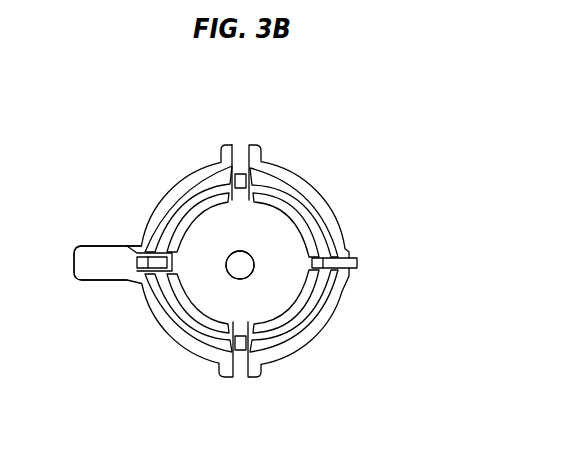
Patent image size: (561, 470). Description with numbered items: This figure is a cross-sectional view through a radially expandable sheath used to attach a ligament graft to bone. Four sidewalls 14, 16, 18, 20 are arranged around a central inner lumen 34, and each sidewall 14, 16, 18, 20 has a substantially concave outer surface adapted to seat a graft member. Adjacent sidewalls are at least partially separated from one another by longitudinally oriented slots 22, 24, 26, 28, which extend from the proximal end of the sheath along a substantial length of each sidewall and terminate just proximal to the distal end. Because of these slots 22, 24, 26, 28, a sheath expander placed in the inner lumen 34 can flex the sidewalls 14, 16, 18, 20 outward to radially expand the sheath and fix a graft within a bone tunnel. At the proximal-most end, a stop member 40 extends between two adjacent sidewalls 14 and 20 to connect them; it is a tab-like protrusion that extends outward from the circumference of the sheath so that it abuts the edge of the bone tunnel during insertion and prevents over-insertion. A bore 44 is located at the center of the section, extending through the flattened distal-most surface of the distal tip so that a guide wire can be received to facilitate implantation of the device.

The sidewall 14 is at (181, 322).
The sidewall 16 is at (305, 322).
The sidewall 18 is at (300, 200).
The sidewall 20 is at (178, 192).
The longitudinally oriented slot 22 is at (242, 378).
The longitudinally oriented slot 24 is at (360, 262).
The longitudinally oriented slot 26 is at (240, 164).
The longitudinally oriented slot 28 is at (145, 258).
The inner lumen 34 is at (257, 244).
The stop member 40 is at (107, 263).
The bore 44 is at (238, 268).